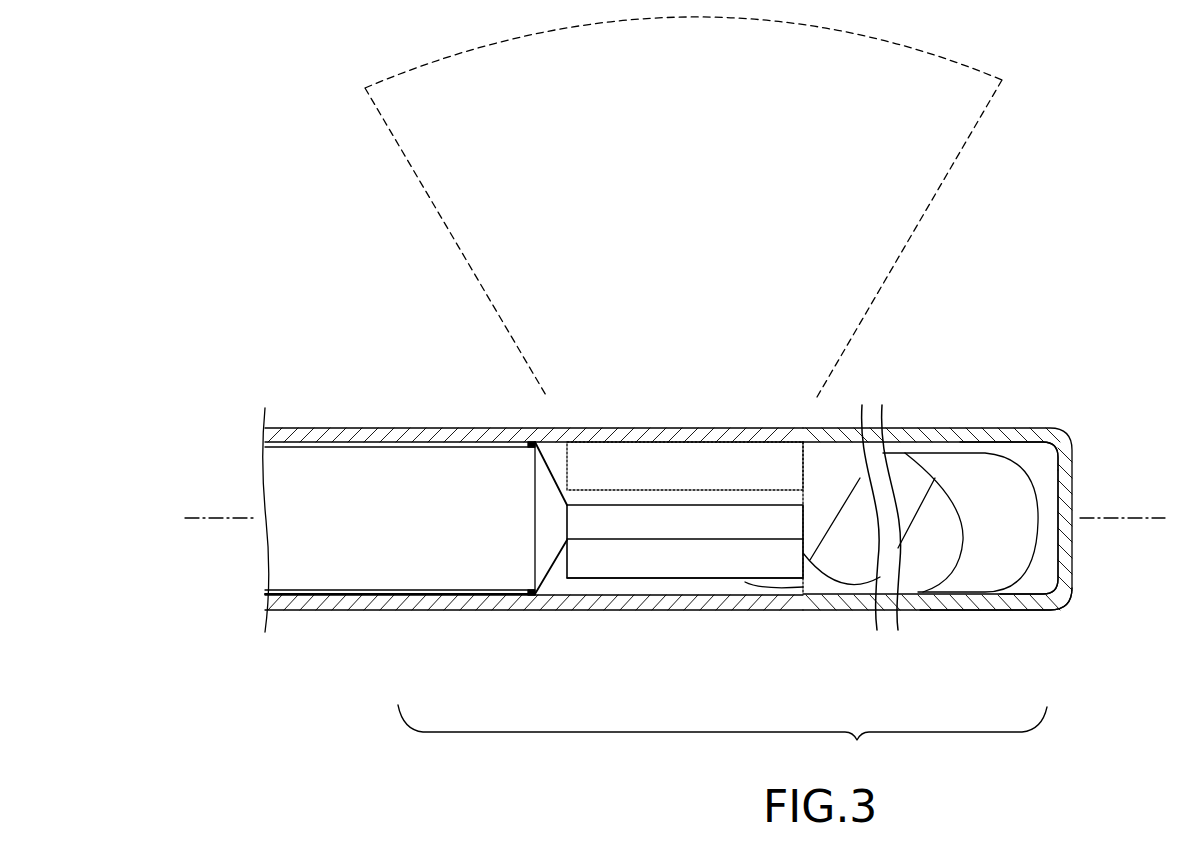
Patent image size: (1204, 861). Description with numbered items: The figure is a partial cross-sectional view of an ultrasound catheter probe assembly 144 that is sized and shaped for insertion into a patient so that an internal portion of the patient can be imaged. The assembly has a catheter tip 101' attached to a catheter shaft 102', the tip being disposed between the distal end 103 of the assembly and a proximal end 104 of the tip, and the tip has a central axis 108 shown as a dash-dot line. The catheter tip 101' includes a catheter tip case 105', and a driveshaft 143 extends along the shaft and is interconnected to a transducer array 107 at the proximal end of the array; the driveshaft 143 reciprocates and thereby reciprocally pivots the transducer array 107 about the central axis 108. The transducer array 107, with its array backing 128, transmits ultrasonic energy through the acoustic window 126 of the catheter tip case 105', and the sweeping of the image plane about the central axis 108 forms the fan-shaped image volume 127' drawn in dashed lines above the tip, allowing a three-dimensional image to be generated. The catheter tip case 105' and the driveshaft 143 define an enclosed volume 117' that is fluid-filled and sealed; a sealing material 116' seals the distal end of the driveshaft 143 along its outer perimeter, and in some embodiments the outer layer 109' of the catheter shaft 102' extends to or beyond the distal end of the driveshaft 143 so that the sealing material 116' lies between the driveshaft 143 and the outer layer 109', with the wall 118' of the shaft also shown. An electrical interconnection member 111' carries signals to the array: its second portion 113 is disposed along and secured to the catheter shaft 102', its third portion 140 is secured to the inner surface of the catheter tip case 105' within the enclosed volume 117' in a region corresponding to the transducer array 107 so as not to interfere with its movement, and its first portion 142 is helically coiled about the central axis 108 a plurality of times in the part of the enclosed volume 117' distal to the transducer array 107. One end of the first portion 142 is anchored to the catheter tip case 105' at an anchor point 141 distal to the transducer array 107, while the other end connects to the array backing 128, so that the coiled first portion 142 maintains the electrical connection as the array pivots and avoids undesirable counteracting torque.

The catheter tip 101' is at (722, 737).
The catheter shaft 102' is at (278, 703).
The distal end 103 is at (1098, 541).
The proximal end 104 is at (384, 390).
The catheter tip case 105' is at (931, 553).
The transducer array 107 is at (750, 503).
The central axis 108 is at (1142, 518).
The outer layer 109' is at (533, 491).
The electrical interconnection member 111' is at (1012, 424).
The second portion 113 is at (363, 443).
The sealing material 116' is at (554, 575).
The enclosed volume 117' is at (920, 517).
The sleeve wall 118' is at (400, 626).
The acoustic window 126 is at (663, 428).
The image volume 127' is at (661, 207).
The array backing 128 is at (667, 580).
The third portion 140 is at (747, 585).
The anchor point 141 is at (973, 610).
The first portion 142 is at (1040, 508).
The driveshaft 143 is at (547, 573).
The catheter probe assembly 144 is at (287, 109).